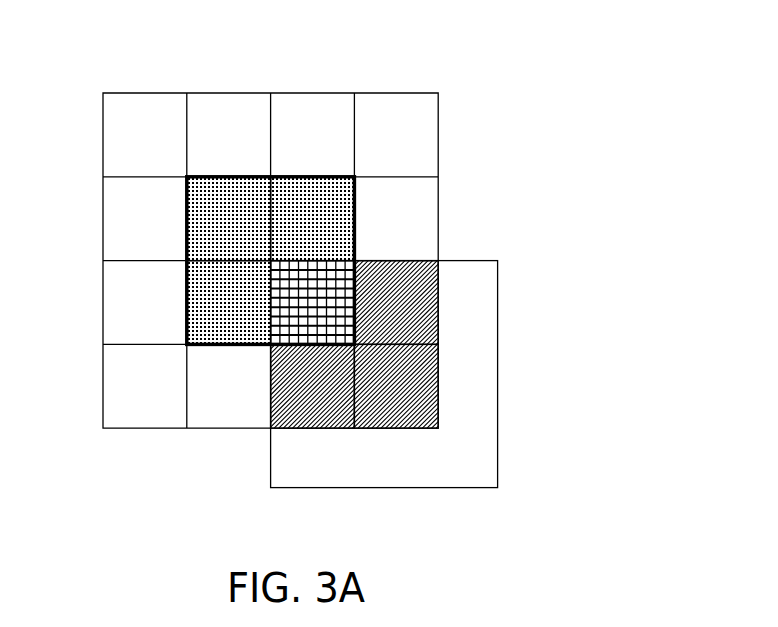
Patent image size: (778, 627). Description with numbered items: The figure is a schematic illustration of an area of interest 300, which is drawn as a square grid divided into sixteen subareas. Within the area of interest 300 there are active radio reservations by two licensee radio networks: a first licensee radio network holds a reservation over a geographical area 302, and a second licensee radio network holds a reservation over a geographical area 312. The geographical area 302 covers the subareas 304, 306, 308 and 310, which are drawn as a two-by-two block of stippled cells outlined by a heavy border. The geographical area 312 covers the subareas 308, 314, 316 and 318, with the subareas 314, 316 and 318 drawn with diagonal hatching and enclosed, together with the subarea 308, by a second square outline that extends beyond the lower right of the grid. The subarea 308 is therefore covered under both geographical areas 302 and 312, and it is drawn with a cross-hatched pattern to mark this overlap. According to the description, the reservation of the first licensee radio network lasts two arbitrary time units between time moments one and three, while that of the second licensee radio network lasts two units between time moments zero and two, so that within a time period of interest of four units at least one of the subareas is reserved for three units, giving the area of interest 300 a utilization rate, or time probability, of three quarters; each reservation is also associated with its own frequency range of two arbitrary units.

The area of interest 300 is at (445, 85).
The geographical area 302 is at (271, 266).
The subarea 304 is at (187, 223).
The subarea 306 is at (187, 306).
The subarea 308 is at (266, 348).
The subarea 310 is at (355, 215).
The geographical area 312 is at (498, 460).
The subarea 314 is at (316, 430).
The subarea 316 is at (438, 393).
The subarea 318 is at (438, 300).